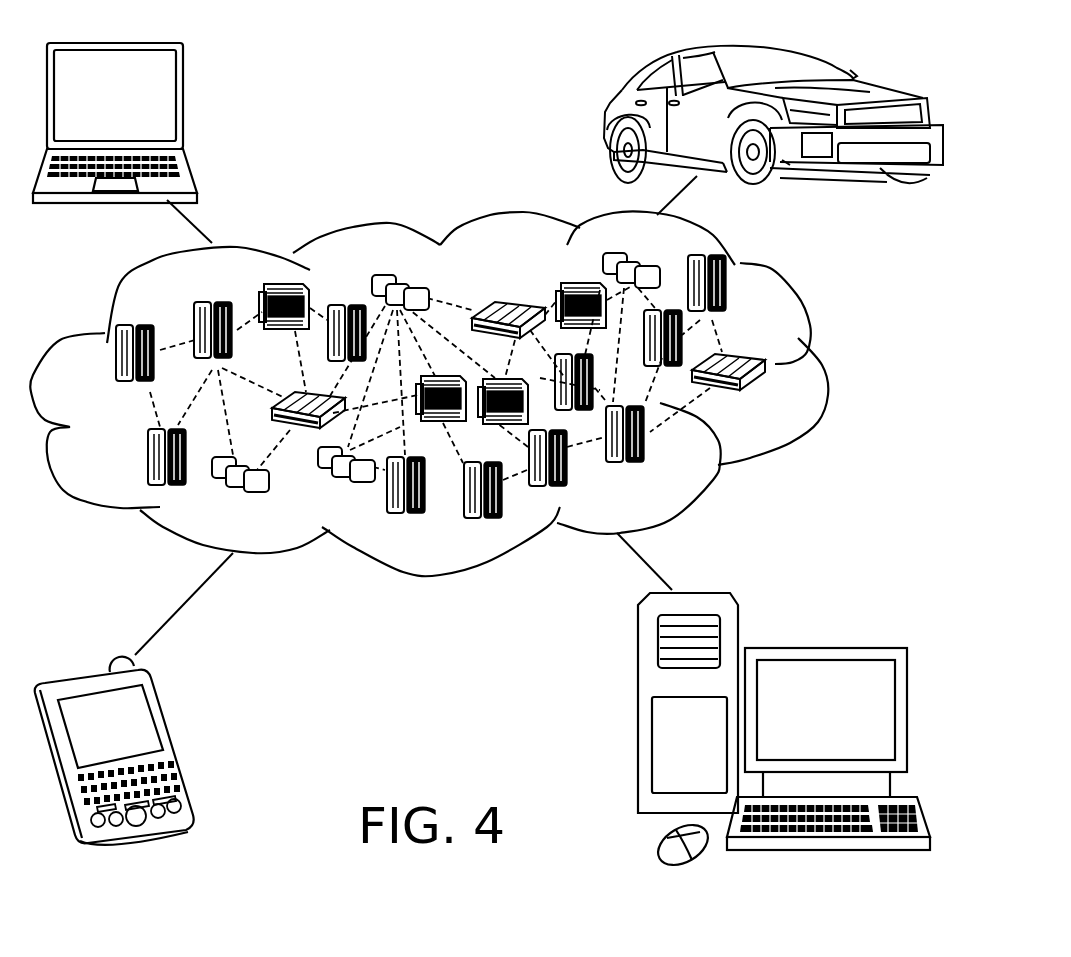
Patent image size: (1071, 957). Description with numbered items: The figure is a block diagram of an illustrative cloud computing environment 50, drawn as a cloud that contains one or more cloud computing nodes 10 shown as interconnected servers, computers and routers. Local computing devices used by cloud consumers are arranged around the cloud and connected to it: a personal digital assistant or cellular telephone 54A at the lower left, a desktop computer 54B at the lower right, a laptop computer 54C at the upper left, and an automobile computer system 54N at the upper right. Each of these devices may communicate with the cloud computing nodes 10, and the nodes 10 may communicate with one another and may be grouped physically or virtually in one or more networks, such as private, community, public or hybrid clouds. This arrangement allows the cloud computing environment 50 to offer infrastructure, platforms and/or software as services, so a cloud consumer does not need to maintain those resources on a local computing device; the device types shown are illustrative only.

The cloud computing node 10 is at (768, 397).
The cloud computing environment 50 is at (826, 367).
The personal digital assistant or cellular telephone 54A is at (170, 740).
The desktop computer 54B is at (823, 647).
The laptop computer 54C is at (183, 104).
The automobile computer system 54N is at (606, 117).